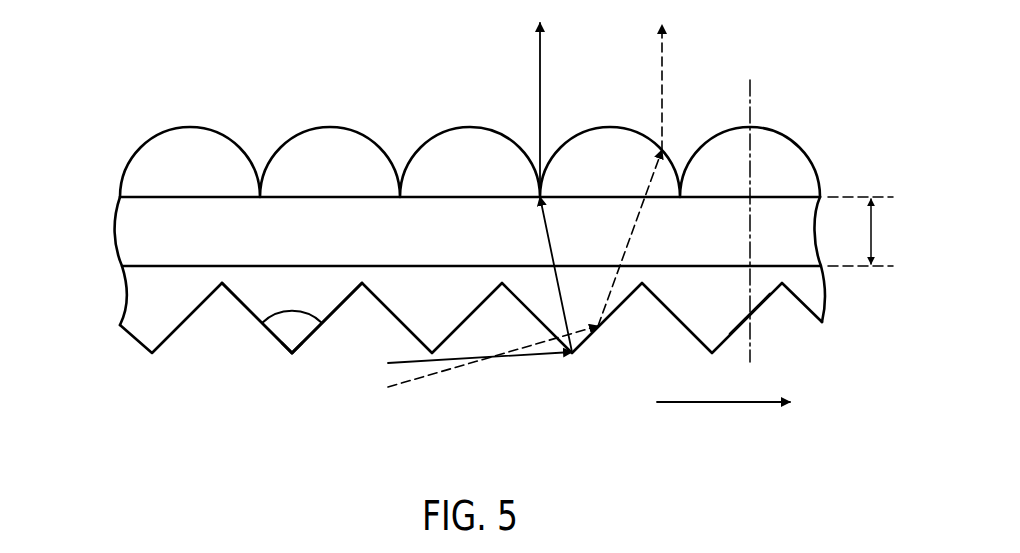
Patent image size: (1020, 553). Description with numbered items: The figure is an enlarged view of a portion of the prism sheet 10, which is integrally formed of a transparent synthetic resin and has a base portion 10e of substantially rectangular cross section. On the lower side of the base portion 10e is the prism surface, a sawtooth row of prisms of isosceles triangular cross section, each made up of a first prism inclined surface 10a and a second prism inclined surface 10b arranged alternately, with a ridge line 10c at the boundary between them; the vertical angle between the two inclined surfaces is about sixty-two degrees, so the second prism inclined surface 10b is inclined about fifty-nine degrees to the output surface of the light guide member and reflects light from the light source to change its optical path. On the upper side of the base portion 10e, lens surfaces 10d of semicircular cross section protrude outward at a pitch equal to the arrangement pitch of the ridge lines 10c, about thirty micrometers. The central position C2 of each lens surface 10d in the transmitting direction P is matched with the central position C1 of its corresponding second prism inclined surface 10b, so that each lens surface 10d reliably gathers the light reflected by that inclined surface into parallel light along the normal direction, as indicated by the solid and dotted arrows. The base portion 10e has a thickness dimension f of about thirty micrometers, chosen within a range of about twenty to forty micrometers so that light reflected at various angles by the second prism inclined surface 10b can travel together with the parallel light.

The prism sheet 10 is at (452, 234).
The first prism inclined surface 10a is at (269, 339).
The second prism inclined surface 10b is at (310, 347).
The ridge line 10c is at (292, 356).
The lens surface 10d is at (330, 123).
The base portion 10e is at (133, 235).
The central position of second prism inclined surface C1 is at (752, 311).
The central position of lens surface C2 is at (749, 123).
The thickness dimension of base portion f is at (874, 225).
The transmitting direction P is at (718, 404).